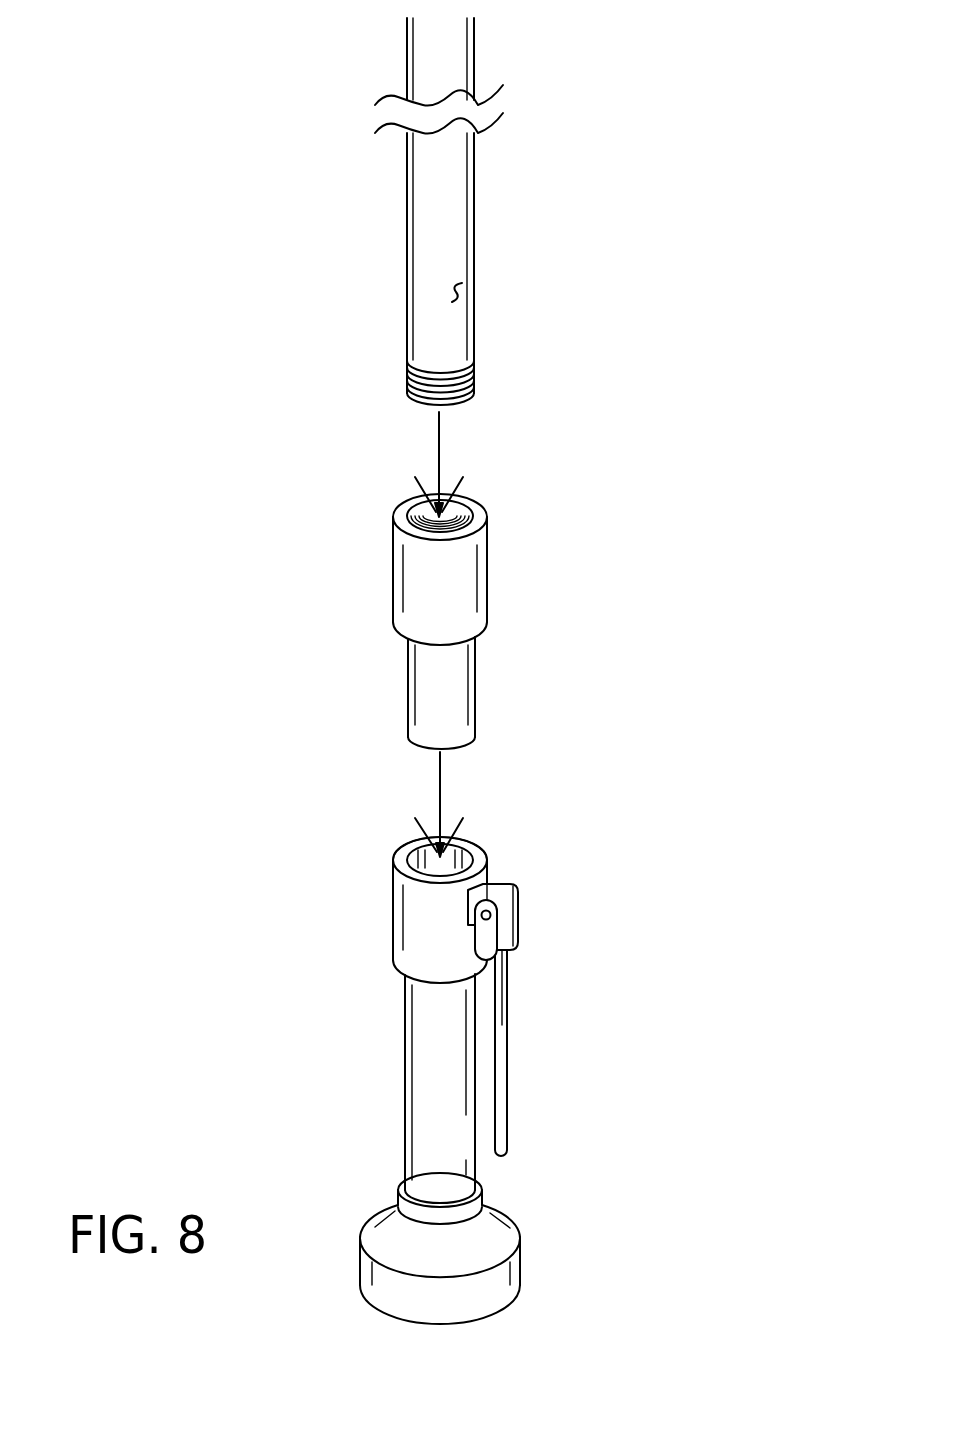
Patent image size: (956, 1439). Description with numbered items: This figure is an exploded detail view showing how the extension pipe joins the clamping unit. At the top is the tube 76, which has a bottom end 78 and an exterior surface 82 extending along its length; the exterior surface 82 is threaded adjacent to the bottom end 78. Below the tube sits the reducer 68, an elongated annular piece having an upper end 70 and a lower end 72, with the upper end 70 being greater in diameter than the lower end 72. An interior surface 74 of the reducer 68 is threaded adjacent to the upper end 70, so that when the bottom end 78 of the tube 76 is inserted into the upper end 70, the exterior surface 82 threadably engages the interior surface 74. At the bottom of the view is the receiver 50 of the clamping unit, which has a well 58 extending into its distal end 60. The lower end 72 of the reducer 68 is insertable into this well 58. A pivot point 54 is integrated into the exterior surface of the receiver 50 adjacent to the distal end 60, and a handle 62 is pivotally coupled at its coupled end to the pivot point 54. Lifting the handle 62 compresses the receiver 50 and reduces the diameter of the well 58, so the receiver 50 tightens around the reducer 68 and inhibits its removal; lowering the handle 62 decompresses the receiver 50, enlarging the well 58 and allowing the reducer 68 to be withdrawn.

The receiver 50 is at (397, 893).
The pivot point 54 is at (500, 901).
The well 58 is at (415, 855).
The distal end 60 is at (481, 840).
The handle 62 is at (507, 1060).
The reducer 68 is at (488, 572).
The upper end 70 is at (478, 502).
The lower end 72 is at (413, 742).
The interior surface 74 is at (417, 518).
The tube 76 is at (407, 215).
The bottom end 78 is at (420, 404).
The exterior surface 82 is at (470, 292).